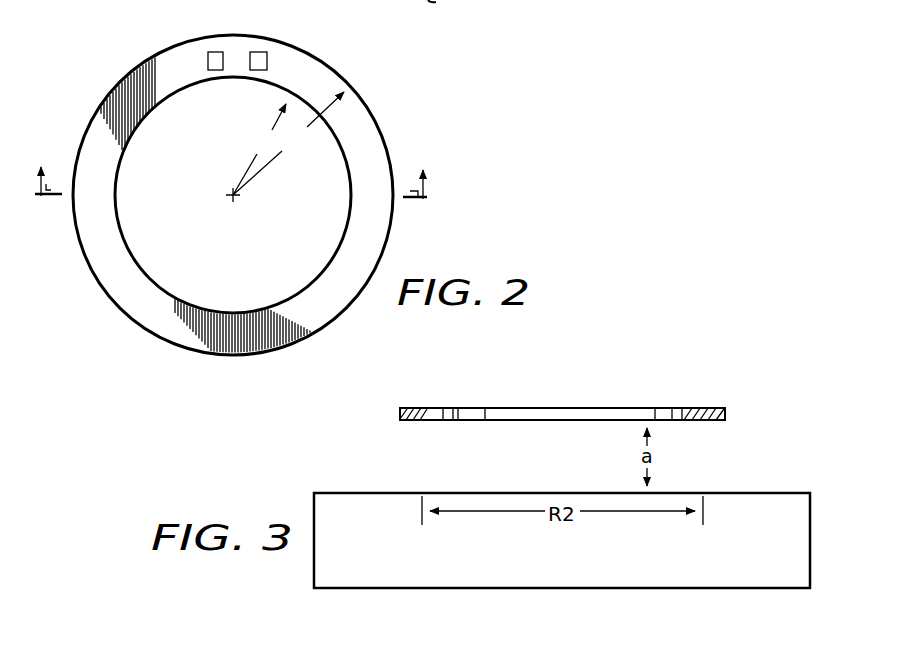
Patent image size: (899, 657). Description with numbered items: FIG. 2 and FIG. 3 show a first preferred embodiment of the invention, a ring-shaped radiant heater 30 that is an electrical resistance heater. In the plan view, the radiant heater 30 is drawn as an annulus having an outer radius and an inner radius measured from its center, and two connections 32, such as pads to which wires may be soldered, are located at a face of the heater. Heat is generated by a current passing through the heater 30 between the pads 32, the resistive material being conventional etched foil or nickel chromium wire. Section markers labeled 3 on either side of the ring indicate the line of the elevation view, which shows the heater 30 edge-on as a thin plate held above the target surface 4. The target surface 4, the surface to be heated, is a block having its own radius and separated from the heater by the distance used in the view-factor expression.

In FIG. 2, the radiant heater 30 is at (99, 88).
In FIG. 3, the radiant heater 30 is at (419, 400).
In FIG. 2, the connections 32 is at (258, 52).
In FIG. 2, the section line for FIG. 3 is at (232, 164).
In FIG. 3, the target surface 4 is at (385, 486).